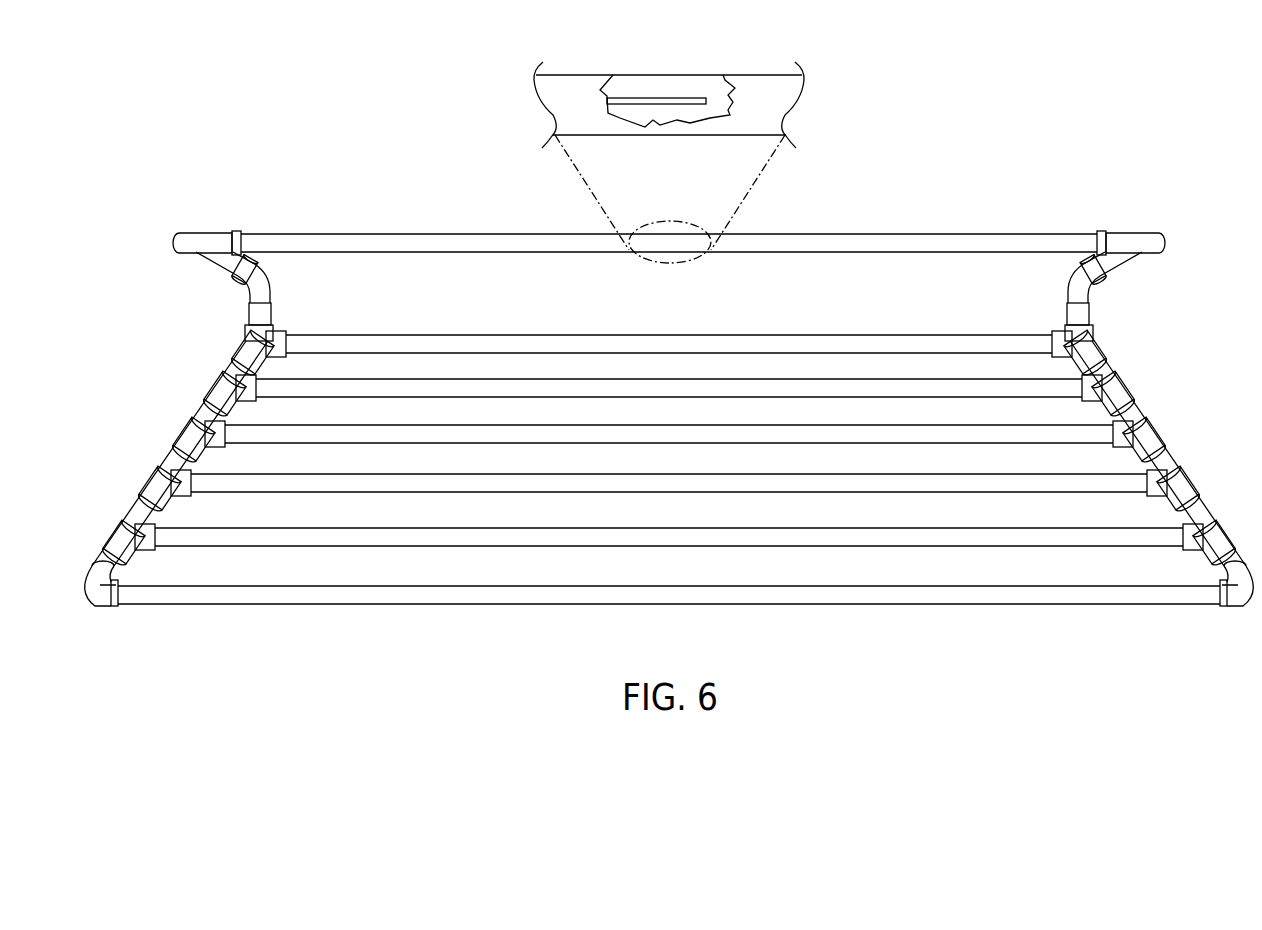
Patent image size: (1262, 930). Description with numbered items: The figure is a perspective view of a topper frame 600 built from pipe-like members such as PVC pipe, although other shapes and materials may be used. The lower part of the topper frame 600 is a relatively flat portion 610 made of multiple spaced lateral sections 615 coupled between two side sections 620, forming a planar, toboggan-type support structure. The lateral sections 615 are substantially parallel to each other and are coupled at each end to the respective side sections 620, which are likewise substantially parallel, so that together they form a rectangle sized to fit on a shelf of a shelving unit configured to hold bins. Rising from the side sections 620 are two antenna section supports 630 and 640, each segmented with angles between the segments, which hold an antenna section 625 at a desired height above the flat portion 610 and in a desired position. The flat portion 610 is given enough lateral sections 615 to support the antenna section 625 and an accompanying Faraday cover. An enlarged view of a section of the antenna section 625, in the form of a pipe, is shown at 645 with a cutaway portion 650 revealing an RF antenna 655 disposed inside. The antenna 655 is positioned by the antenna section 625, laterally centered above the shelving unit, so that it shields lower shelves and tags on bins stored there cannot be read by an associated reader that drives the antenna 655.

The topper frame 600 is at (244, 64).
The flat portion 610 is at (1160, 452).
The lateral sections 615 is at (668, 585).
The side sections 620 is at (178, 457).
The antenna section 625 is at (955, 233).
The antenna section support 630 is at (1083, 289).
The antenna section support 640 is at (230, 267).
The section of the antenna section 645 is at (762, 75).
The cutaway portion 650 is at (608, 83).
The RF antenna 655 is at (657, 105).